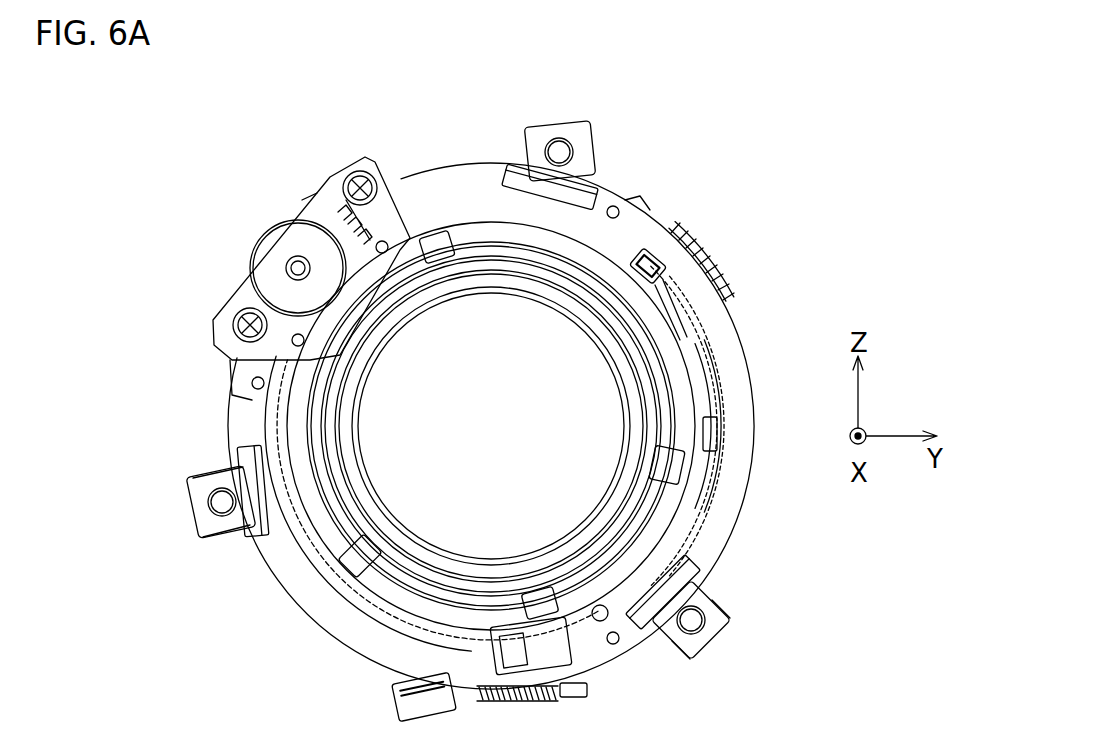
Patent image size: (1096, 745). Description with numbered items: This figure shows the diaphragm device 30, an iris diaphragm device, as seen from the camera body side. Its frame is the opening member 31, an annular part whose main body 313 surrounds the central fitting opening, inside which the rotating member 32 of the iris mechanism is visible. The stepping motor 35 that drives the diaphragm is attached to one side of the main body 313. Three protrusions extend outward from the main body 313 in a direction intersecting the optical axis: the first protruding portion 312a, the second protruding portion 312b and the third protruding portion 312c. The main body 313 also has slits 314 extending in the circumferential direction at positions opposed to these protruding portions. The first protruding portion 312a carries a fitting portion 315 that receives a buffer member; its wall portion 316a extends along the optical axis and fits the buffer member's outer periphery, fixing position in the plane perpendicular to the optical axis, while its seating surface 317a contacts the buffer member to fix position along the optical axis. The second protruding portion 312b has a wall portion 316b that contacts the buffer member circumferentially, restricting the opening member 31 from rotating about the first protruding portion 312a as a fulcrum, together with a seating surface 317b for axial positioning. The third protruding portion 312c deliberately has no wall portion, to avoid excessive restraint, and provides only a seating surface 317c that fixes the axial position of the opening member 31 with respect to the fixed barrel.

The diaphragm device 30 is at (771, 306).
The opening member 31 is at (329, 630).
The rotating member 32 is at (447, 299).
The stepping motor 35 is at (262, 238).
The main body 313 is at (627, 235).
The slits 314 is at (518, 175).
The fitting portion 315 is at (745, 660).
The first protruding portion 312a is at (669, 642).
The second protruding portion 312b is at (146, 532).
The third protruding portion 312c is at (647, 124).
The wall portion 316a is at (727, 612).
The wall portion 316b is at (210, 473).
The seating surface 317a is at (712, 612).
The seating surface 317b is at (207, 498).
The seating surface 317c is at (609, 150).